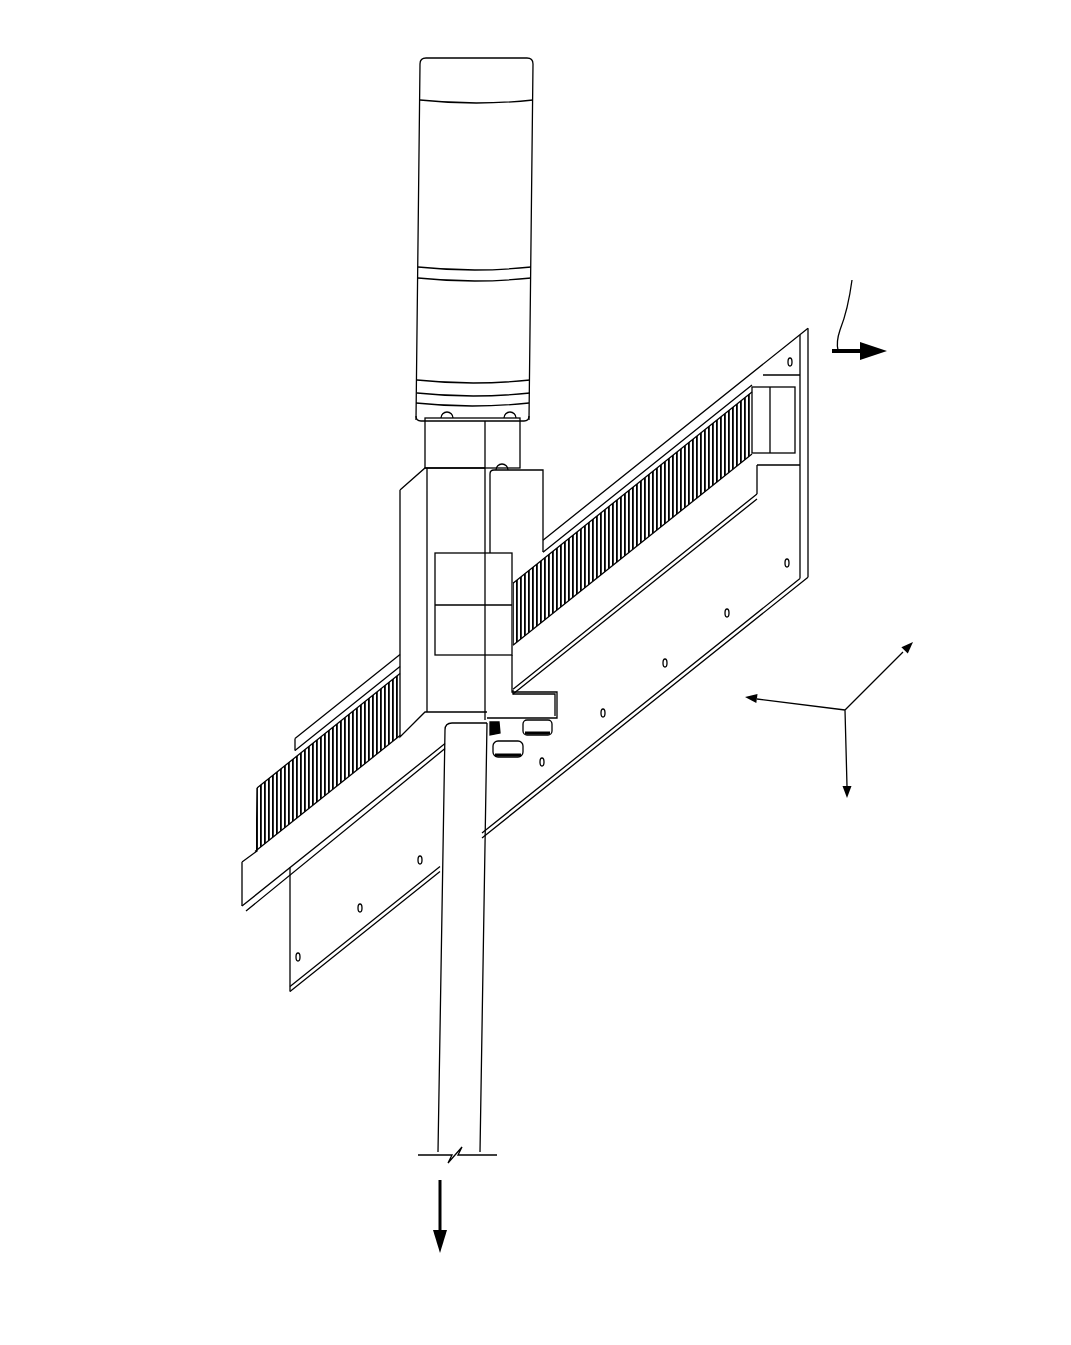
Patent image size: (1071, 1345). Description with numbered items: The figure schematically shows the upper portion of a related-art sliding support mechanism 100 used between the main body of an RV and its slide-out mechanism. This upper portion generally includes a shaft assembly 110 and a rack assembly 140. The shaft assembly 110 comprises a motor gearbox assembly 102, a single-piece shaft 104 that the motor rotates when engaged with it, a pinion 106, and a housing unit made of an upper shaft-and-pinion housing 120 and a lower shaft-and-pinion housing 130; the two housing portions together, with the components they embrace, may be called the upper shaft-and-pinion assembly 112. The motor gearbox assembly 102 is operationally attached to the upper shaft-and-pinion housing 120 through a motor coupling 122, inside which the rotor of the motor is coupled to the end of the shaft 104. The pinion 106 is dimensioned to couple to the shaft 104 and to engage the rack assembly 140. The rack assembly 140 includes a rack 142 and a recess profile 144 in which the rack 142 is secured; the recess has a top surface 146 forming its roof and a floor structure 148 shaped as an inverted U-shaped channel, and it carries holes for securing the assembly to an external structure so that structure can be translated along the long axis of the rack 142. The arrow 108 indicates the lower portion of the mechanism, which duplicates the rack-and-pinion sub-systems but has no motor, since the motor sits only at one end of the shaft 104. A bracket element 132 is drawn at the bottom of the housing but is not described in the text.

The sliding support mechanism 100 is at (680, 100).
The motor gearbox assembly 102 is at (374, 223).
The single-piece shaft 104 is at (458, 947).
The pinion 106 is at (453, 577).
The arrow 108 is at (440, 1197).
The shaft assembly 110 is at (197, 426).
The shaft-and-pinion assembly 112 is at (369, 610).
The upper shaft-and-pinion housing 120 is at (475, 542).
The motor coupling 122 is at (473, 448).
The lower shaft-and-pinion housing 130 is at (473, 680).
The mounting bracket 132 is at (560, 678).
The rack assembly 140 is at (679, 634).
The rack 142 is at (730, 410).
The recess profile 144 is at (786, 426).
The top surface 146 is at (755, 366).
The floor structure 148 is at (782, 494).